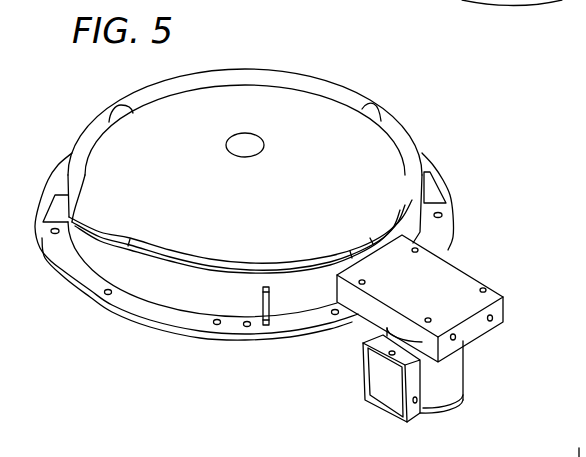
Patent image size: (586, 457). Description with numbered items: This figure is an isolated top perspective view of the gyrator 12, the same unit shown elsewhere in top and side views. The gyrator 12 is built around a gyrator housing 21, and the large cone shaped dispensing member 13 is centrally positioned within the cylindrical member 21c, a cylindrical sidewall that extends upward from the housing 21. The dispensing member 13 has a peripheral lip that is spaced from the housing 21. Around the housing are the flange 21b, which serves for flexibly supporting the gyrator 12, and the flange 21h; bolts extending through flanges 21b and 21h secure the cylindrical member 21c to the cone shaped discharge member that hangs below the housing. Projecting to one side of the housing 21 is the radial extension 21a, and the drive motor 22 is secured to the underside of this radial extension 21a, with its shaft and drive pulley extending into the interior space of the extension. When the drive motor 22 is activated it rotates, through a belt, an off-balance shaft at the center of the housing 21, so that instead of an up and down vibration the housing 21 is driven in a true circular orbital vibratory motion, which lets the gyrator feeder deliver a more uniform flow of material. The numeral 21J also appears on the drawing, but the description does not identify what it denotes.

The gyrator 12 is at (211, 56).
The cone shaped dispensing member 13 is at (210, 225).
The gyrator housing 21 is at (36, 225).
The radial extension 21a is at (448, 277).
The flange 21b is at (53, 180).
The cylindrical member 21c is at (240, 292).
The flange 21h is at (110, 308).
The lug 21J is at (517, 1).
The drive motor 22 is at (450, 375).